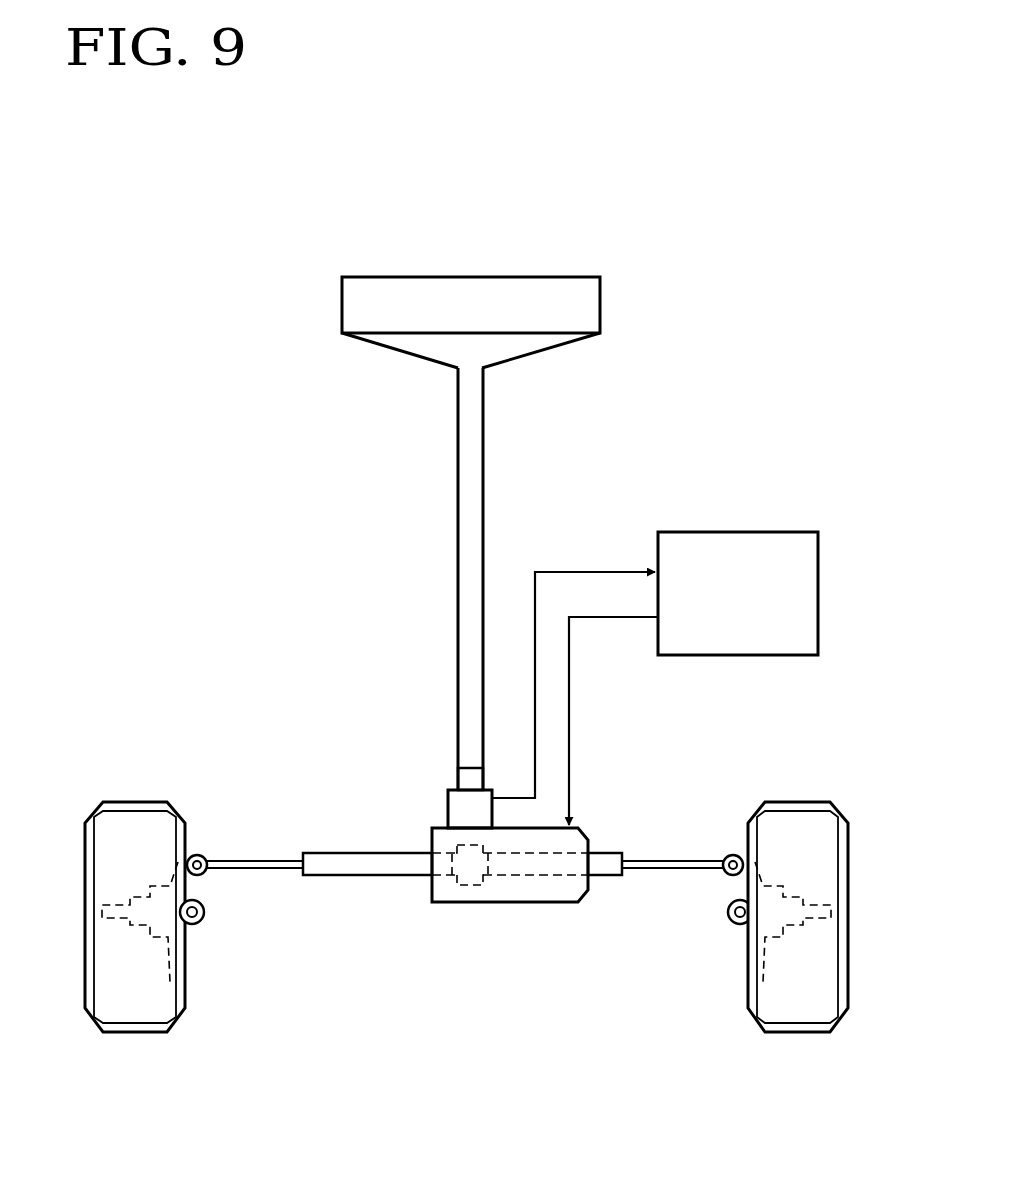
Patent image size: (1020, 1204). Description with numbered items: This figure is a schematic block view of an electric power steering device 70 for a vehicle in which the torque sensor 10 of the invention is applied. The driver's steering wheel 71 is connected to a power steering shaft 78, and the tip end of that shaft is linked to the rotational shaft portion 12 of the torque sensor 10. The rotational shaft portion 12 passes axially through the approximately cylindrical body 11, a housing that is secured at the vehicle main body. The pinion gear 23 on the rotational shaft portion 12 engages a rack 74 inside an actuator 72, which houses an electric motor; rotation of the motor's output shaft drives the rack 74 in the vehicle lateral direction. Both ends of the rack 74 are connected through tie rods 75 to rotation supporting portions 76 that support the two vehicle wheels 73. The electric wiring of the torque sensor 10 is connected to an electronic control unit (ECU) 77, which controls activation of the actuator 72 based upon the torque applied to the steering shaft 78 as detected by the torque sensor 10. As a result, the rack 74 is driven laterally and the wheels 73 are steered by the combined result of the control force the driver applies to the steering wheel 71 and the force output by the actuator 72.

The torque sensor 10 is at (444, 848).
The cylindrical body 11 is at (456, 796).
The rotational shaft portion 12 is at (462, 778).
The pinion gear 23 is at (472, 893).
The electric power steering device 70 is at (752, 303).
The steering wheel 71 is at (342, 300).
The actuator 72 is at (543, 893).
The vehicle wheels 73 is at (843, 856).
The rack 74 is at (372, 876).
The tie rods 75 is at (253, 870).
The rotation supporting portions 76 is at (200, 855).
The electronic control unit (ECU) 77 is at (767, 532).
The power steering shaft 78 is at (458, 556).